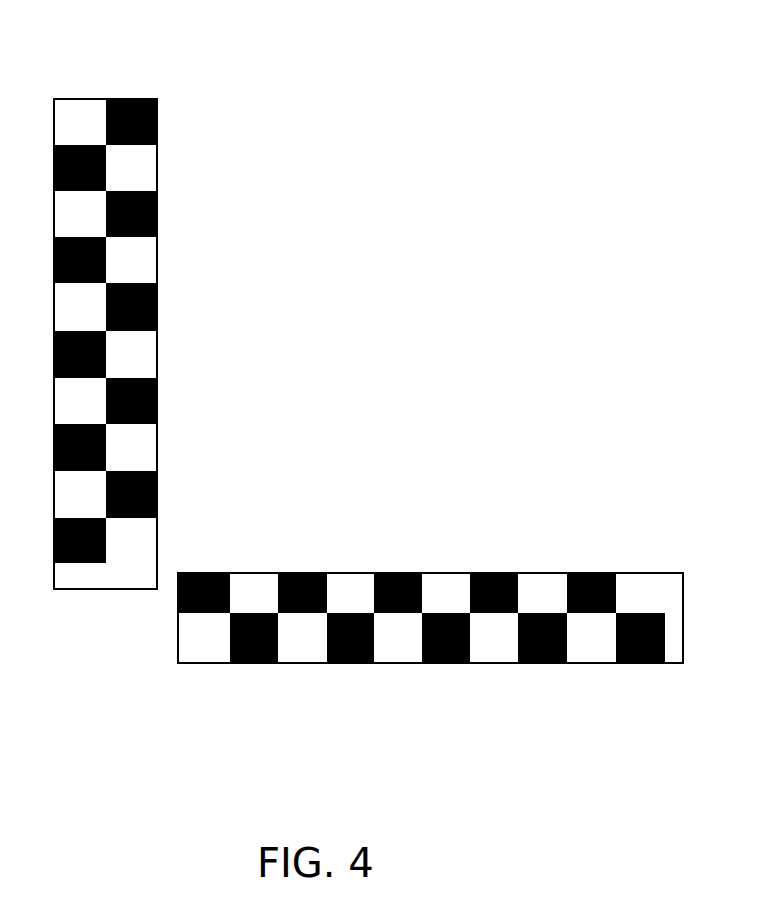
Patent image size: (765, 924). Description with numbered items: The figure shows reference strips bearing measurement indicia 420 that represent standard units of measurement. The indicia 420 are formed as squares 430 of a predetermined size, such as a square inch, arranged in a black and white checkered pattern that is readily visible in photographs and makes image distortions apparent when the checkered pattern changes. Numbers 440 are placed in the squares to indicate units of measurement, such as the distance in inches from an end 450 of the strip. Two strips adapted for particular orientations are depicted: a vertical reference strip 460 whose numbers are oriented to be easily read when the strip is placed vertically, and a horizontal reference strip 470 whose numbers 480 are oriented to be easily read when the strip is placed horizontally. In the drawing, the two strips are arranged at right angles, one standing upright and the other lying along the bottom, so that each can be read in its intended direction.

The measurement indicia 420 is at (168, 309).
The squares 430 is at (158, 173).
The numbers 440 is at (123, 260).
The end of the reference strip 450 is at (93, 100).
The vertical reference strip 460 is at (346, 253).
The horizontal reference strip 470 is at (430, 534).
The numbers 480 is at (352, 590).